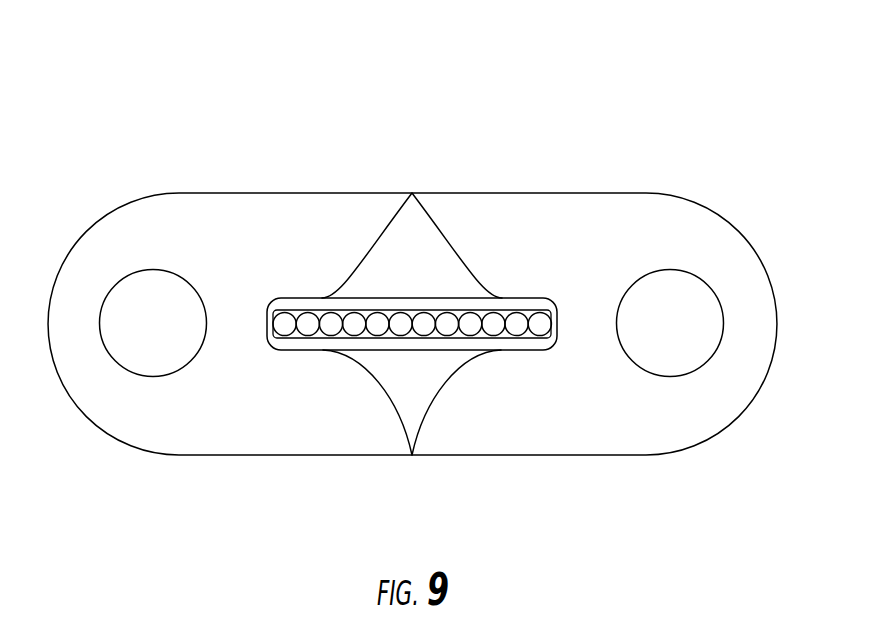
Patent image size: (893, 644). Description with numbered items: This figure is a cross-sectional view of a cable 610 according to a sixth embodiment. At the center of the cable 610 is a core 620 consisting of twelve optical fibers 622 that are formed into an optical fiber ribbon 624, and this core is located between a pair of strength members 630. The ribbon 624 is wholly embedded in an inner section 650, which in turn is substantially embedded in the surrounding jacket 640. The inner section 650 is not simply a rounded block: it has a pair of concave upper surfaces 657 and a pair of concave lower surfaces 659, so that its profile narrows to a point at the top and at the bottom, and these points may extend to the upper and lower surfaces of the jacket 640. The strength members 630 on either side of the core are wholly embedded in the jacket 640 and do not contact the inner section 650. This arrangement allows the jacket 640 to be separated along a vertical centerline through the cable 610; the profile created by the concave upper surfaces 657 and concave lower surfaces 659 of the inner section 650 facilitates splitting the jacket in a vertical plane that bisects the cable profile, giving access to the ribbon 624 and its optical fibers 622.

The cable 610 is at (112, 132).
The core 620 is at (360, 305).
The optical fibers 622 is at (467, 331).
The optical fiber ribbon 624 is at (323, 342).
The strength members 630 is at (150, 282).
The jacket 640 is at (265, 442).
The inner section 650 is at (452, 297).
The concave upper surfaces 657 is at (433, 250).
The concave lower surfaces 659 is at (438, 397).